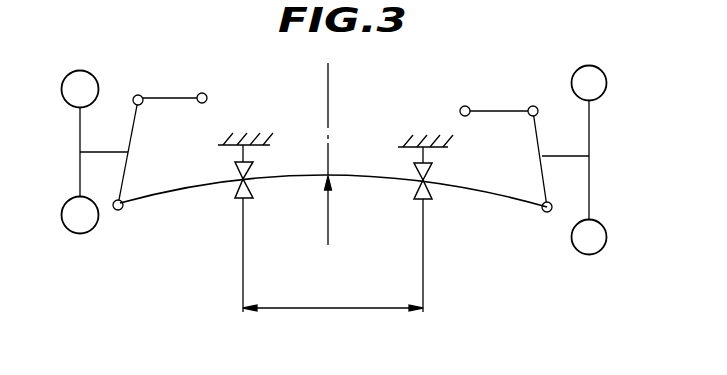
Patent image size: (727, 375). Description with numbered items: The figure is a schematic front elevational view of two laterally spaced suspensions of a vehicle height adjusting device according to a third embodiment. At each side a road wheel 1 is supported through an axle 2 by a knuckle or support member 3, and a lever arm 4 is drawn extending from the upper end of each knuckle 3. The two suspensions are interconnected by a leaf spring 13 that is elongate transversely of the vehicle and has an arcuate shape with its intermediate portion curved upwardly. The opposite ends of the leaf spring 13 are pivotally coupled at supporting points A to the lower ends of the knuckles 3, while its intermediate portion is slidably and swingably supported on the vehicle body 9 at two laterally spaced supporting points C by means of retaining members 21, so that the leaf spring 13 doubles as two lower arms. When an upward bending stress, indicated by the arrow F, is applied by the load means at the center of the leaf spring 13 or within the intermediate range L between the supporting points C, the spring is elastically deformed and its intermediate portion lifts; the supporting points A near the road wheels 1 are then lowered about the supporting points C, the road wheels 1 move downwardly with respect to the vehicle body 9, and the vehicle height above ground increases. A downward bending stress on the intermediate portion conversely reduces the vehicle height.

The road wheel 1 is at (78, 71).
The axle 2 is at (108, 150).
The knuckle or support member 3 is at (137, 125).
The lever arm 4 is at (183, 97).
The vehicle body 9 is at (246, 140).
The leaf spring 13 is at (362, 175).
The retaining member 21 is at (237, 198).
The supporting point A is at (117, 213).
The supporting point C is at (240, 178).
The arrow indicating bending stress F is at (325, 222).
The intermediate range L is at (333, 300).